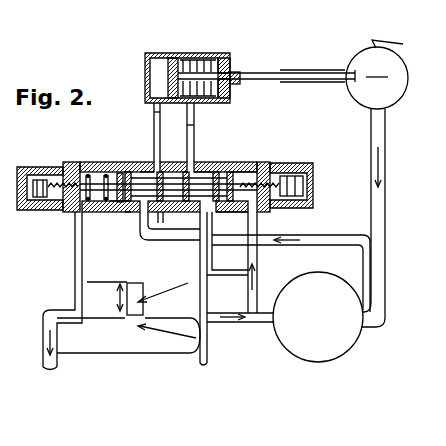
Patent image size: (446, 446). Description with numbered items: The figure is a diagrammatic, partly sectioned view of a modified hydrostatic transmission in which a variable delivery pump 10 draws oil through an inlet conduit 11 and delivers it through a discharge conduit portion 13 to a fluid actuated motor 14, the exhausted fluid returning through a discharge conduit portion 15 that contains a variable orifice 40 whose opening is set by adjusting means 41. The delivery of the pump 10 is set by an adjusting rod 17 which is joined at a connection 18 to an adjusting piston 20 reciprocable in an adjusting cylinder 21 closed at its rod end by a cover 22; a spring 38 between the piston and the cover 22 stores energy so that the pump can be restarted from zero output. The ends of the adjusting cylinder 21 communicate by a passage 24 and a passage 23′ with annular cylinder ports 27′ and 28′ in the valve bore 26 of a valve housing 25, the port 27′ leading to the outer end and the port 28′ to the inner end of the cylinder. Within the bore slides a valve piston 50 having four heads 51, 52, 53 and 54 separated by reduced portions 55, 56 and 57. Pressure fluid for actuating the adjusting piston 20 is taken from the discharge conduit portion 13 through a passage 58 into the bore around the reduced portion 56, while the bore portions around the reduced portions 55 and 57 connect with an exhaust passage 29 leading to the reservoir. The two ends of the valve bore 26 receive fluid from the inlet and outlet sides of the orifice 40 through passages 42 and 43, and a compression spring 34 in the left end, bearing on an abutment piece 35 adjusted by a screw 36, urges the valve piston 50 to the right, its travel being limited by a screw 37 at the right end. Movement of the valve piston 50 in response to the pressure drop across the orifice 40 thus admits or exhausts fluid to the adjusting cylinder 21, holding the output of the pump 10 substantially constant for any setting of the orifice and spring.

The variable delivery pump 10 is at (408, 80).
The inlet conduit 11 is at (399, 44).
The discharge conduit portion 13 is at (387, 280).
The fluid actuated motor 14 is at (343, 355).
The discharge conduit portion 15 is at (236, 324).
The adjusting rod 17 is at (305, 80).
The connection 18 is at (284, 73).
The adjusting piston 20 is at (173, 53).
The adjusting cylinder 21 is at (146, 64).
The cover 22 is at (241, 86).
The passage 23′ is at (195, 127).
The passage 24 is at (153, 120).
The valve housing 25 is at (118, 212).
The valve bore 26 is at (241, 172).
The cylinder port 27′ is at (150, 166).
The cylinder port 28′ is at (204, 170).
The exhaust passage 29 is at (210, 361).
The compression spring 34 is at (93, 170).
The abutment piece 35 is at (72, 172).
The screw 36 is at (41, 192).
The screw 37 is at (274, 182).
The spring 38 is at (228, 63).
The variable orifice 40 is at (148, 312).
The orifice adjusting means 41 is at (118, 296).
The passage 42 is at (258, 263).
The passage 43 is at (81, 262).
The valve piston 50 is at (128, 206).
The head 51 is at (119, 165).
The head 52 is at (164, 234).
The head 53 is at (210, 242).
The head 54 is at (238, 168).
The reduced portion 55 is at (160, 214).
The reduced portion 56 is at (174, 132).
The reduced portion 57 is at (219, 211).
The passage 58 is at (338, 236).